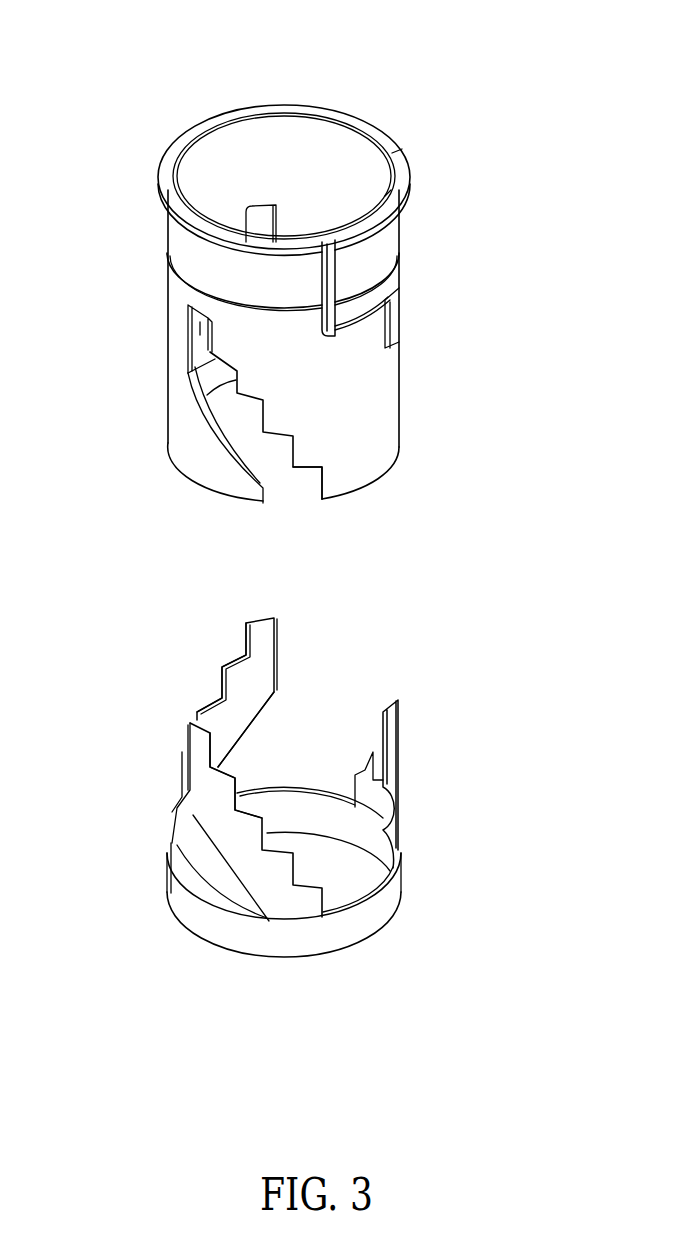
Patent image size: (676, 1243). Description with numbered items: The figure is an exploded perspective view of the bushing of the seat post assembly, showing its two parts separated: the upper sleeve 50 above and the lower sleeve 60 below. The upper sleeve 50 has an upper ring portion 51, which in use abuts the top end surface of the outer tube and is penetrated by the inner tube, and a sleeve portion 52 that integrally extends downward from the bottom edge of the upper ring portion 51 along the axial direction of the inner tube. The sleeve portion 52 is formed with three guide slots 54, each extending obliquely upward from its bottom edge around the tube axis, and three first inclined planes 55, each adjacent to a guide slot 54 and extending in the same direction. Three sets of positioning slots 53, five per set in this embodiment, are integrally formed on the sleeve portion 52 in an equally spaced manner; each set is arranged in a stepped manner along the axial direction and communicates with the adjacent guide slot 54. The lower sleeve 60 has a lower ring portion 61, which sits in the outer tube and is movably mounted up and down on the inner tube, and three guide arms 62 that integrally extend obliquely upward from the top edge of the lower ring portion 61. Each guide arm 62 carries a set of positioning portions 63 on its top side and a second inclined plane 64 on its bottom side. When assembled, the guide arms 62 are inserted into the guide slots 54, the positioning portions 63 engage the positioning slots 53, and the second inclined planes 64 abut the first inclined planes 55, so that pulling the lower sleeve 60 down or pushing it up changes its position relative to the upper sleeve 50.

The upper sleeve 50 is at (297, 291).
The upper ring portion 51 is at (175, 153).
The sleeve portion 52 is at (182, 297).
The positioning slots 53 is at (280, 432).
The guide slot 54 is at (295, 480).
The first inclined plane 55 is at (223, 445).
The lower sleeve 60 is at (296, 826).
The lower ring portion 61 is at (285, 945).
The guide arm 62 is at (250, 683).
The positioning portions 63 is at (257, 628).
The second inclined plane 64 is at (257, 720).